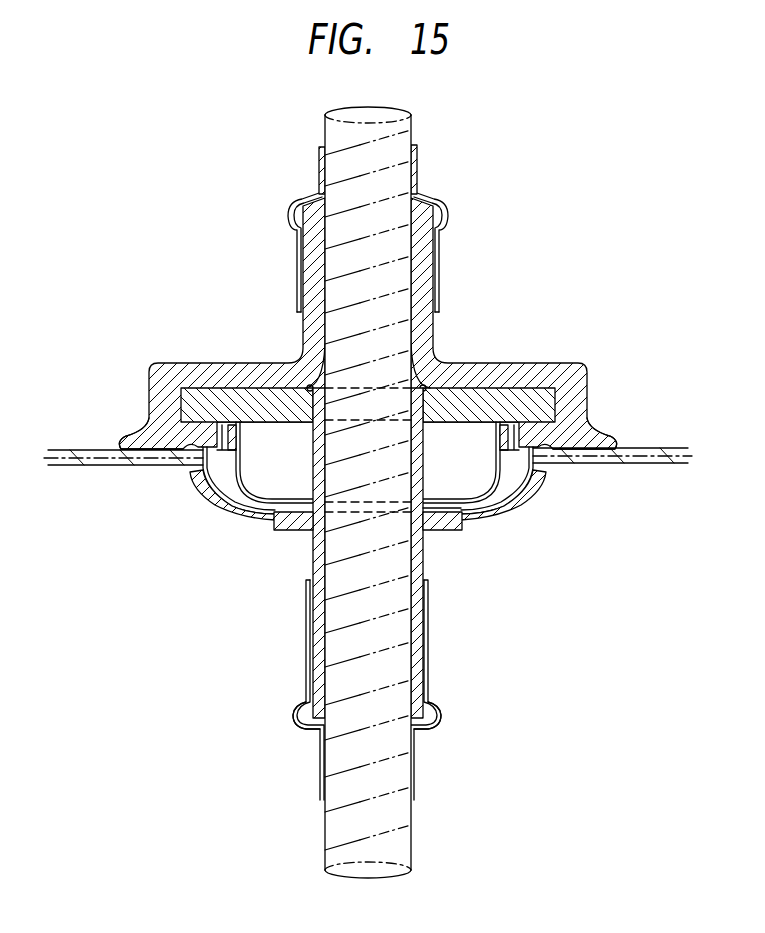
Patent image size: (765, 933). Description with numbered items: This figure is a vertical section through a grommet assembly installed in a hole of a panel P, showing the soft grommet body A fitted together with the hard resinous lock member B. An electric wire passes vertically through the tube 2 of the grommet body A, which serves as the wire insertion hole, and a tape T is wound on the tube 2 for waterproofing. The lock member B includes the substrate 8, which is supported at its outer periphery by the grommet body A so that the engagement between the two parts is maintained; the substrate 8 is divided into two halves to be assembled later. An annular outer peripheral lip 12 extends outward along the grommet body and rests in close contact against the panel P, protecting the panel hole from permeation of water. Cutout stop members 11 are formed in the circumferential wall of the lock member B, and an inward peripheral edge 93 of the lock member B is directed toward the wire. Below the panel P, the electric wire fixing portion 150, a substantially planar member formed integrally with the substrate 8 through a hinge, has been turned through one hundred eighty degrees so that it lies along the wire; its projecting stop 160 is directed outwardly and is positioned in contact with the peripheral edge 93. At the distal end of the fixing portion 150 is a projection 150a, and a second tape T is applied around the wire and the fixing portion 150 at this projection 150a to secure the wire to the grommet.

The tube 2 is at (415, 256).
The substrate 8 is at (563, 363).
The annular outer peripheral lip 12 is at (610, 440).
The cutout stop member 11 is at (530, 510).
The inward peripheral edge 93 is at (483, 512).
The stop 160 is at (452, 532).
The electric wire fixing portion 150 is at (432, 640).
The projection 150a is at (440, 716).
The tape T is at (415, 160).
The grommet body A is at (470, 335).
The lock member B is at (520, 532).
The panel P is at (653, 466).